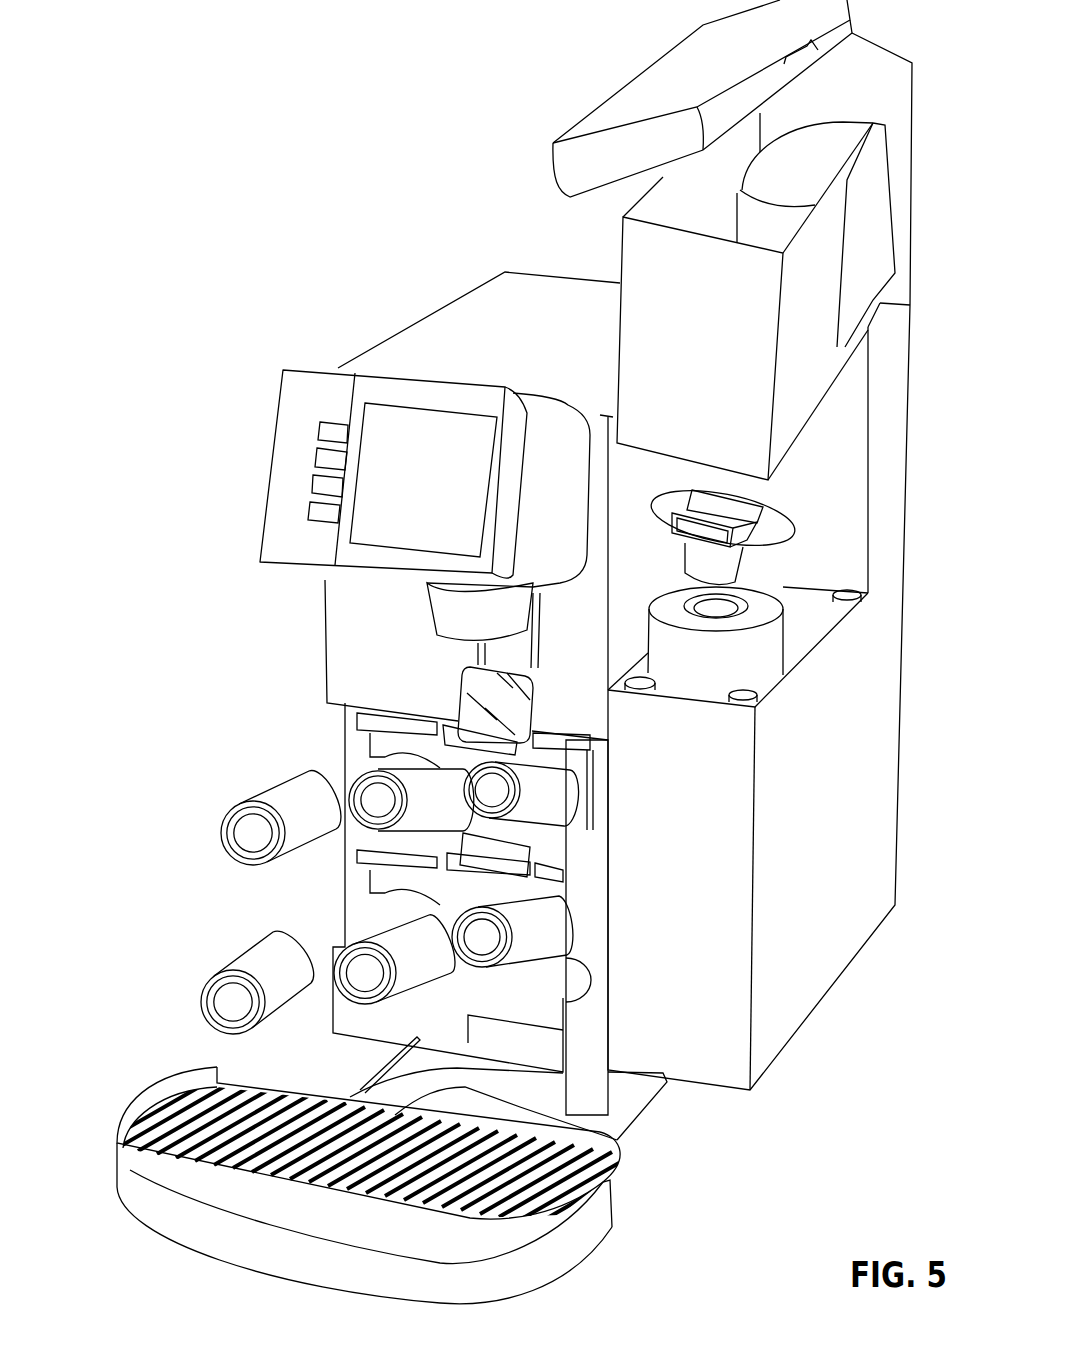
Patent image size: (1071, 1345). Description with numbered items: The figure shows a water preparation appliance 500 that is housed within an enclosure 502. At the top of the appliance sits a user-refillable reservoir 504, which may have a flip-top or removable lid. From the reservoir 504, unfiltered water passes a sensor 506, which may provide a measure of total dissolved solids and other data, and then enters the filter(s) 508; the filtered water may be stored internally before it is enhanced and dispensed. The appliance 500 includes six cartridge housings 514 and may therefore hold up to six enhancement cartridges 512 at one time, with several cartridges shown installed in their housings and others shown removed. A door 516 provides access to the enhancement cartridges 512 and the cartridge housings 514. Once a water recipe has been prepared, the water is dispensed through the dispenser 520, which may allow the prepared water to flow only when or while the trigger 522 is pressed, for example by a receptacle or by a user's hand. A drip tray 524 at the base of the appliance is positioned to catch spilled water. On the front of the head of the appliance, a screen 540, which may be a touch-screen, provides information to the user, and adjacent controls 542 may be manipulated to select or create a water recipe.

The water preparation appliance 500 is at (285, 143).
The enclosure 502 is at (548, 346).
The reservoir 504 is at (642, 235).
The sensor 506 is at (728, 503).
The filter(s) 508 is at (772, 655).
The enhancement cartridges 512 is at (233, 1002).
The cartridge housings 514 is at (362, 848).
The door 516 is at (580, 928).
The dispenser 520 is at (457, 618).
The trigger 522 is at (473, 687).
The drip tray 524 is at (593, 1222).
The screen 540 is at (436, 503).
The controls 542 is at (332, 432).